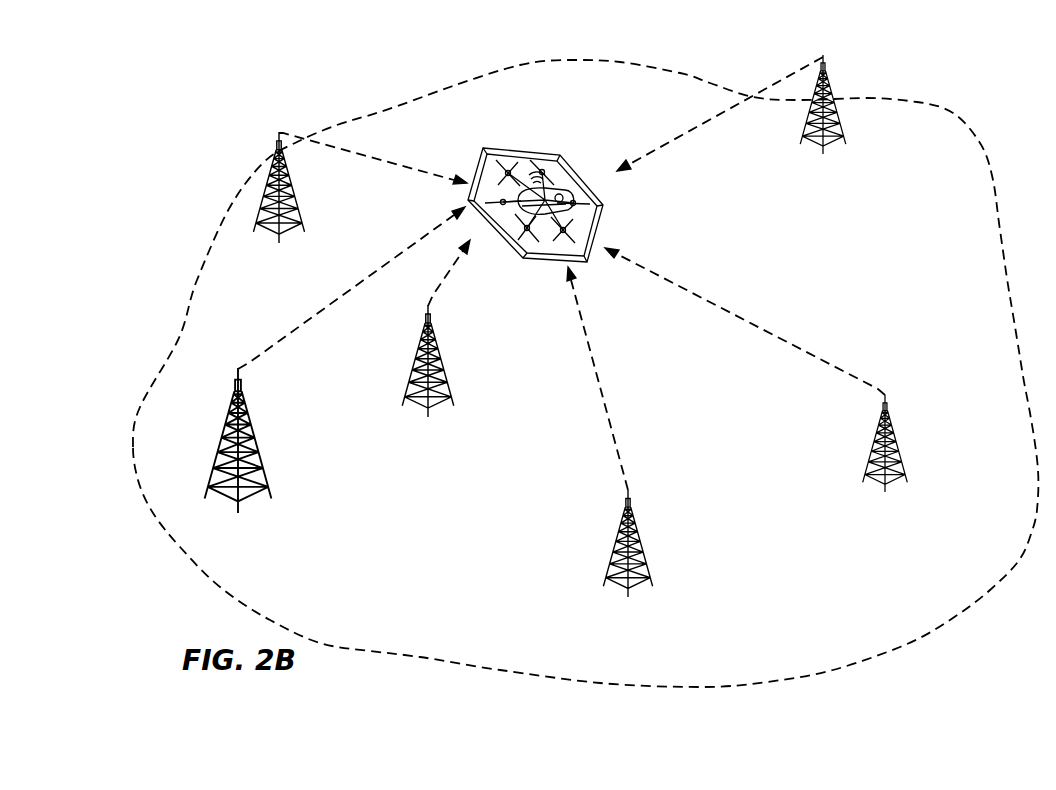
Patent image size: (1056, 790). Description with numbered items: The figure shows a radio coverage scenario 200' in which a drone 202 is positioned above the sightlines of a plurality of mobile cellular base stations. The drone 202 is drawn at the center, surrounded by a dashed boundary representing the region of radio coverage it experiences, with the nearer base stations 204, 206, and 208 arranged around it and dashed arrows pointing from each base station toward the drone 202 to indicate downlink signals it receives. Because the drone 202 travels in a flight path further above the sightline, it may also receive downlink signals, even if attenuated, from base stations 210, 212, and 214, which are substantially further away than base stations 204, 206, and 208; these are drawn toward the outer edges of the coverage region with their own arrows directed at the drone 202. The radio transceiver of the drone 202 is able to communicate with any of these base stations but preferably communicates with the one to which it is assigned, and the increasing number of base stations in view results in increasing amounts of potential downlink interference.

The radio coverage scenario 200' is at (585, 373).
The drone 202 is at (598, 220).
The mobile cellular base station 204 is at (442, 370).
The mobile cellular base station 206 is at (290, 197).
The mobile cellular base station 208 is at (830, 83).
The base station 210 is at (255, 442).
The base station 212 is at (643, 545).
The base station 214 is at (898, 443).